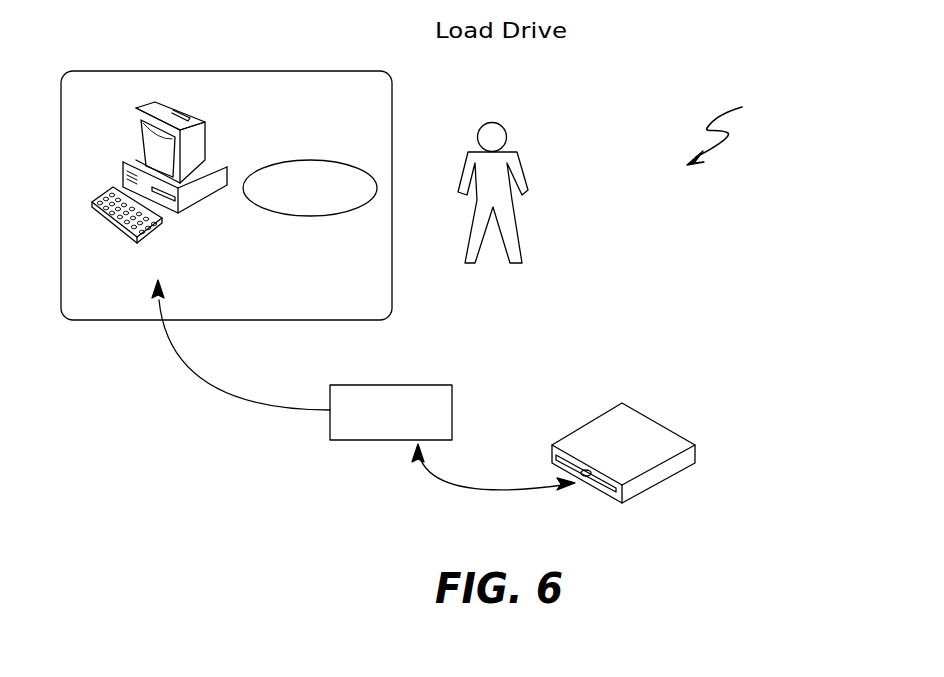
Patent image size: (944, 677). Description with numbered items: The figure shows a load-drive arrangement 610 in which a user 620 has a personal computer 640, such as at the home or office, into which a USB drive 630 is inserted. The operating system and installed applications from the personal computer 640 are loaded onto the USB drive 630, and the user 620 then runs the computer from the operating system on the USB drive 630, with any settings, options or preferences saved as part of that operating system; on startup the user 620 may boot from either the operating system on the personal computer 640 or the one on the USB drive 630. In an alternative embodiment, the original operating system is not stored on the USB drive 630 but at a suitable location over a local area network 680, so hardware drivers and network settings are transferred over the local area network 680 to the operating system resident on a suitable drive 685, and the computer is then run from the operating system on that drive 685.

The system for loading a drive 610 is at (738, 124).
The user 620 is at (522, 163).
The USB drive 630 is at (315, 159).
The personal computer 640 is at (190, 113).
The local area network (LAN) 680 is at (422, 384).
The drive 685 is at (647, 423).